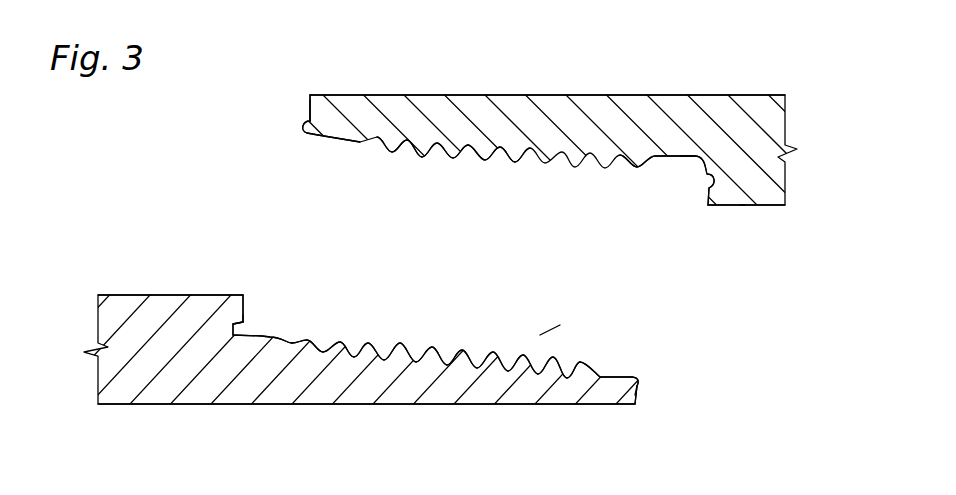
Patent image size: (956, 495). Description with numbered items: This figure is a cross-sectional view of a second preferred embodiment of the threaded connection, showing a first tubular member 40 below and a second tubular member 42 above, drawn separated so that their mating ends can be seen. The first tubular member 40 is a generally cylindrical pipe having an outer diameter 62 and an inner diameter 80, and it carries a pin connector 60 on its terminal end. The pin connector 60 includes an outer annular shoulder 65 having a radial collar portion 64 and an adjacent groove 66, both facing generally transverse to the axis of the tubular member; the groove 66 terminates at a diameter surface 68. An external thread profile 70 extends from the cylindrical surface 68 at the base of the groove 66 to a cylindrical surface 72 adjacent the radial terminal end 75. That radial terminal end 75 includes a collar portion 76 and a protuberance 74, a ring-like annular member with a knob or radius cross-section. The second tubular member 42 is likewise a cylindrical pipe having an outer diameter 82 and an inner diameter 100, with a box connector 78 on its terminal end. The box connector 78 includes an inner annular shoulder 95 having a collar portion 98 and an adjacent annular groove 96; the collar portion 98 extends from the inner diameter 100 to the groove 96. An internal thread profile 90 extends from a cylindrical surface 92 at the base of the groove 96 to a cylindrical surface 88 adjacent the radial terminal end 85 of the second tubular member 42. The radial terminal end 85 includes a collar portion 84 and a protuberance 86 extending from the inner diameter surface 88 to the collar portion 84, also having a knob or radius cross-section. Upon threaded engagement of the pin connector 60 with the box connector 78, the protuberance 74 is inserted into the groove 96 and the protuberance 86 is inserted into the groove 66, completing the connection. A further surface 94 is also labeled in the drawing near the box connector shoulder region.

The first tubular member 40 is at (199, 405).
The second tubular member 42 is at (683, 110).
The pin connector 60 is at (555, 323).
The outer diameter 62 is at (163, 294).
The radial collar portion 64 is at (247, 309).
The outer annular shoulder 65 is at (250, 320).
The groove 66 is at (227, 322).
The diameter surface 68 is at (268, 333).
The external thread profile 70 is at (400, 342).
The cylindrical surface 72 is at (628, 376).
The protuberance 74 is at (643, 381).
The radial terminal end 75 is at (645, 391).
The collar portion 76 is at (636, 401).
The box connector 78 is at (416, 174).
The inner diameter 80 is at (344, 406).
The outer diameter 82 is at (443, 94).
The collar portion 84 is at (306, 95).
The radial terminal end 85 is at (309, 106).
The protuberance 86 is at (302, 128).
The cylindrical surface 88 is at (310, 135).
The internal thread profile 90 is at (488, 163).
The cylindrical surface 92 is at (657, 163).
The arcuate surface 94 is at (693, 172).
The inner annular shoulder 95 is at (700, 188).
The annular groove 96 is at (733, 207).
The collar portion 98 is at (700, 204).
The inner diameter 100 is at (748, 207).